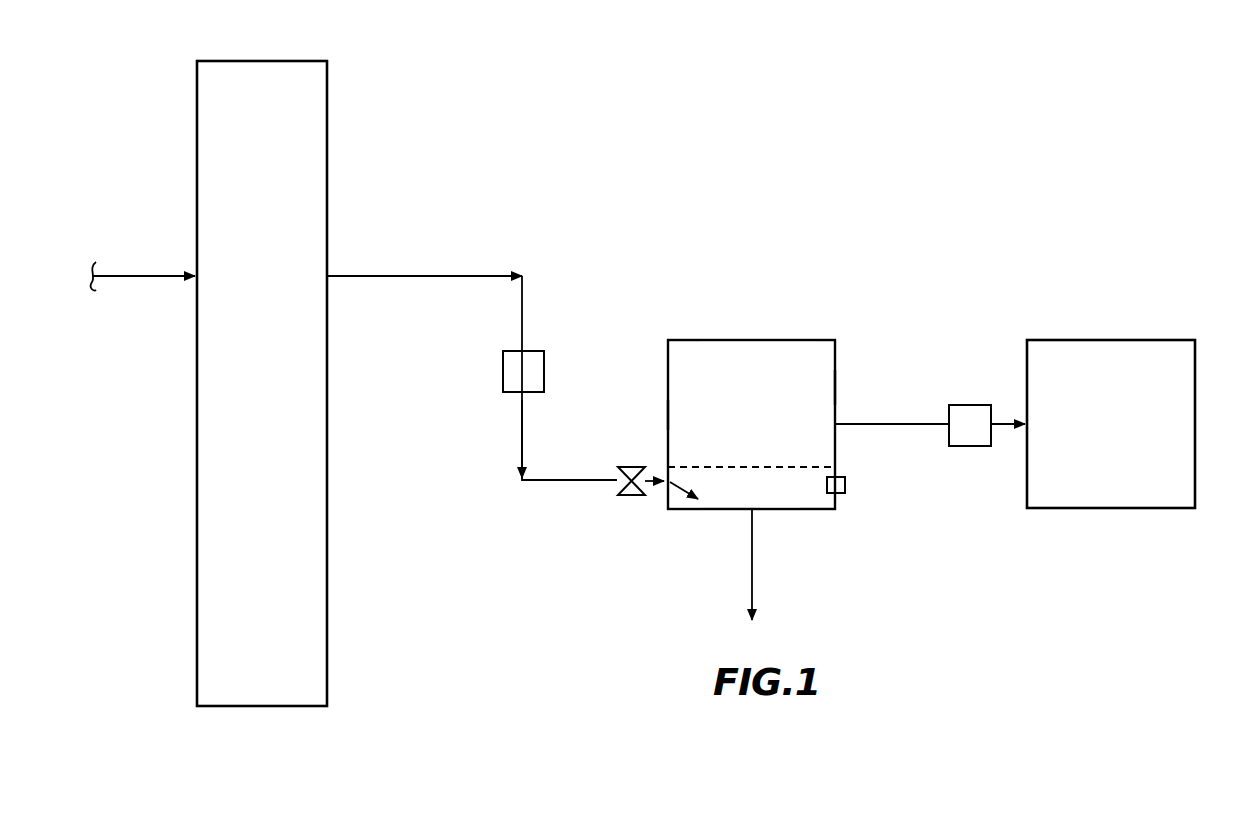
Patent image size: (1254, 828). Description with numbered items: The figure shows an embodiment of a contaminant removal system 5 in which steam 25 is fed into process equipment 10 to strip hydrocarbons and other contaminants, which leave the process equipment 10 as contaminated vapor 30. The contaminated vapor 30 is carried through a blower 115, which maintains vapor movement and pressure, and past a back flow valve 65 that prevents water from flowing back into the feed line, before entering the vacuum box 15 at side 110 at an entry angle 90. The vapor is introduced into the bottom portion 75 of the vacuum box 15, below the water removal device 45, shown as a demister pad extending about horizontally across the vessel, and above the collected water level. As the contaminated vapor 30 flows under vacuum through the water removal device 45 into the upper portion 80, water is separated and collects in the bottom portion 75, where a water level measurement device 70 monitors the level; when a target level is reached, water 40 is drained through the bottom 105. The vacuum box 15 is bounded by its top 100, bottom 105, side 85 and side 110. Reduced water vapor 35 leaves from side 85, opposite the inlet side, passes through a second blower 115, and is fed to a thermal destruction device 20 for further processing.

The contaminant removal system 5 is at (897, 120).
The process equipment 10 is at (327, 147).
The vacuum box 15 is at (753, 340).
The thermal destruction device 20 is at (1127, 340).
The steam 25 is at (160, 277).
The contaminated vapor 30 is at (383, 277).
The reduced water vapor 35 is at (922, 424).
The water 40 is at (752, 578).
The water removal device 45 is at (728, 465).
The back flow valve 65 is at (627, 497).
The water level measurement device 70 is at (845, 485).
The bottom portion 75 is at (735, 498).
The upper portion 80 is at (698, 357).
The side 85 is at (835, 388).
The entry angle 90 is at (676, 490).
The top 100 is at (822, 349).
The bottom 105 is at (818, 509).
The side 110 is at (668, 413).
The blowers 115 is at (532, 364).